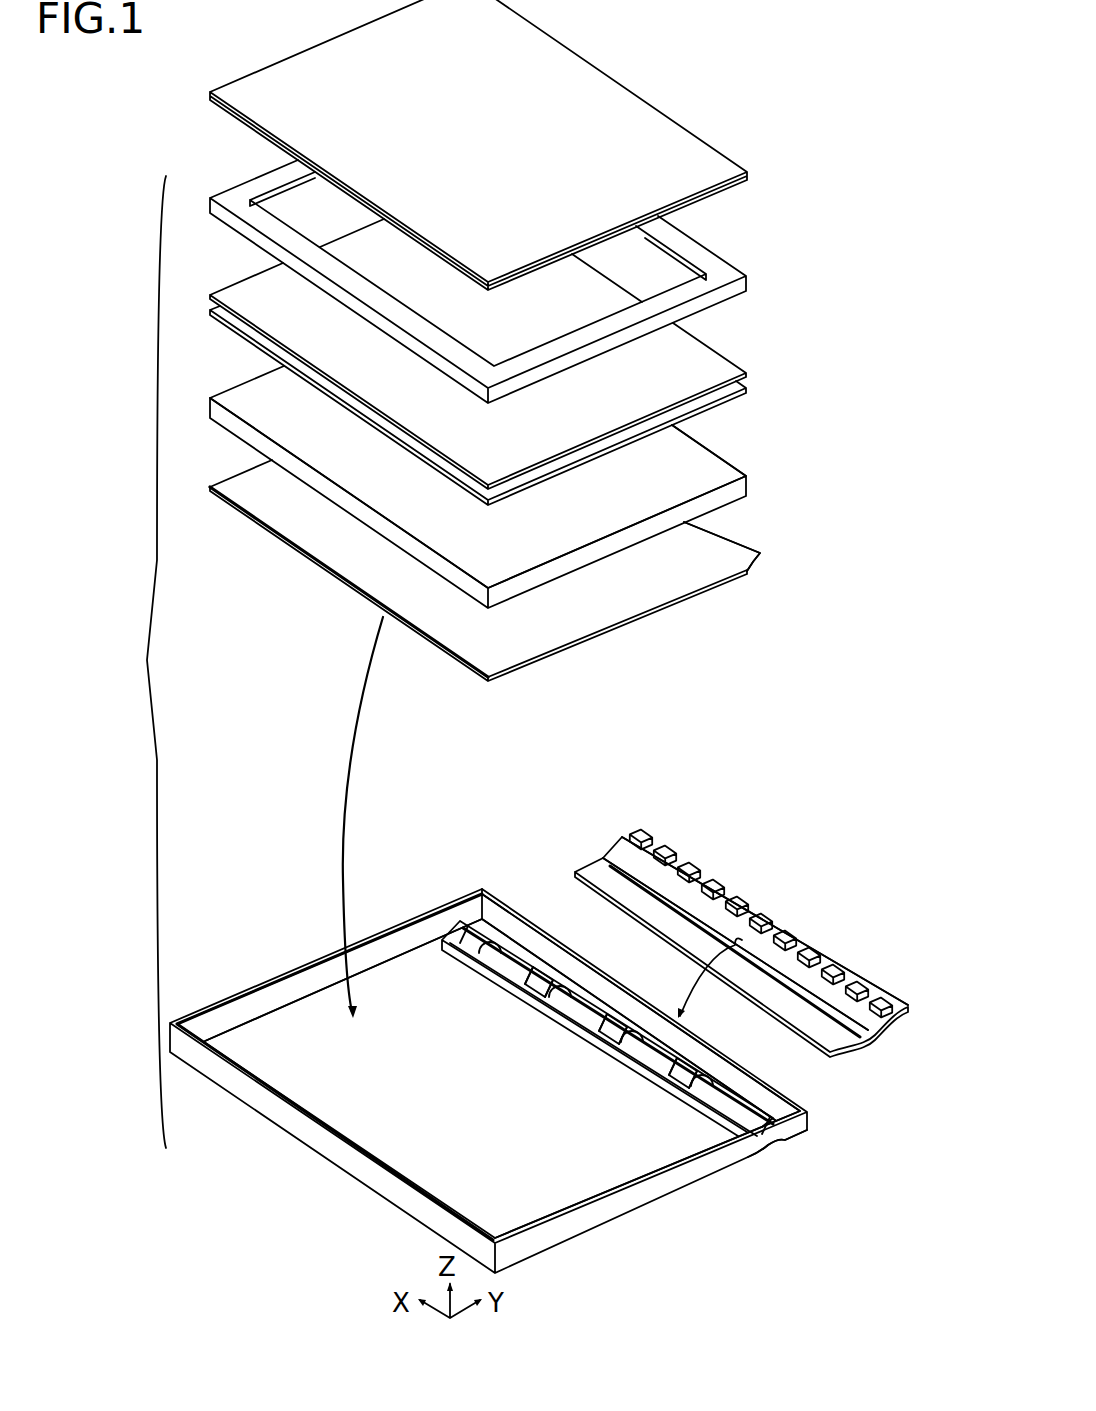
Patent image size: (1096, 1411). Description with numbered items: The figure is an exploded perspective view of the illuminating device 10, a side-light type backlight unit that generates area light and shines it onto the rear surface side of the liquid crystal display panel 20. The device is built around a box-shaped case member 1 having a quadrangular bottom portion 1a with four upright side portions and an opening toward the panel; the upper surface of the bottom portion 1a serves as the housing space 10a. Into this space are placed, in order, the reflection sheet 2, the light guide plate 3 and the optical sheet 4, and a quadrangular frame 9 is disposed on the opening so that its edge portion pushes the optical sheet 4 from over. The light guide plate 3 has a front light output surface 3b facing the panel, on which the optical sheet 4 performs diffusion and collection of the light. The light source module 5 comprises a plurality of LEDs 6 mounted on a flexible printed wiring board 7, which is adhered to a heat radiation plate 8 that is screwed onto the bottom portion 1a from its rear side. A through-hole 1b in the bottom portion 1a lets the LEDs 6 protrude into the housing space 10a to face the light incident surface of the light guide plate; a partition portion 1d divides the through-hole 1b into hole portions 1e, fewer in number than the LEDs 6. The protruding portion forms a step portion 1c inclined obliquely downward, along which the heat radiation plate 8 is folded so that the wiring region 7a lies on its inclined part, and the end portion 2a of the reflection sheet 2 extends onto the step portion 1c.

The liquid crystal display panel 20 is at (230, 74).
The illuminating device 10 is at (142, 662).
The housing space 10a is at (378, 1086).
The frame 9 is at (748, 290).
The optical sheet 4 is at (748, 374).
The light guide plate 3 is at (748, 490).
The light output surface 3b is at (708, 480).
The reflection sheet 2 is at (735, 573).
The end portion of the reflection sheet 2a is at (752, 553).
The case member 1 is at (811, 1128).
The bottom portion 1a is at (522, 1187).
The through-hole 1b is at (596, 1038).
The step portion 1c is at (727, 1128).
The partition portion 1d is at (545, 977).
The hole portion 1e is at (478, 944).
The light source module 5 is at (725, 915).
The LED 6 is at (650, 828).
The flexible printed wiring board 7 is at (622, 836).
The wiring region 7a is at (618, 847).
The heat radiation plate 8 is at (590, 868).